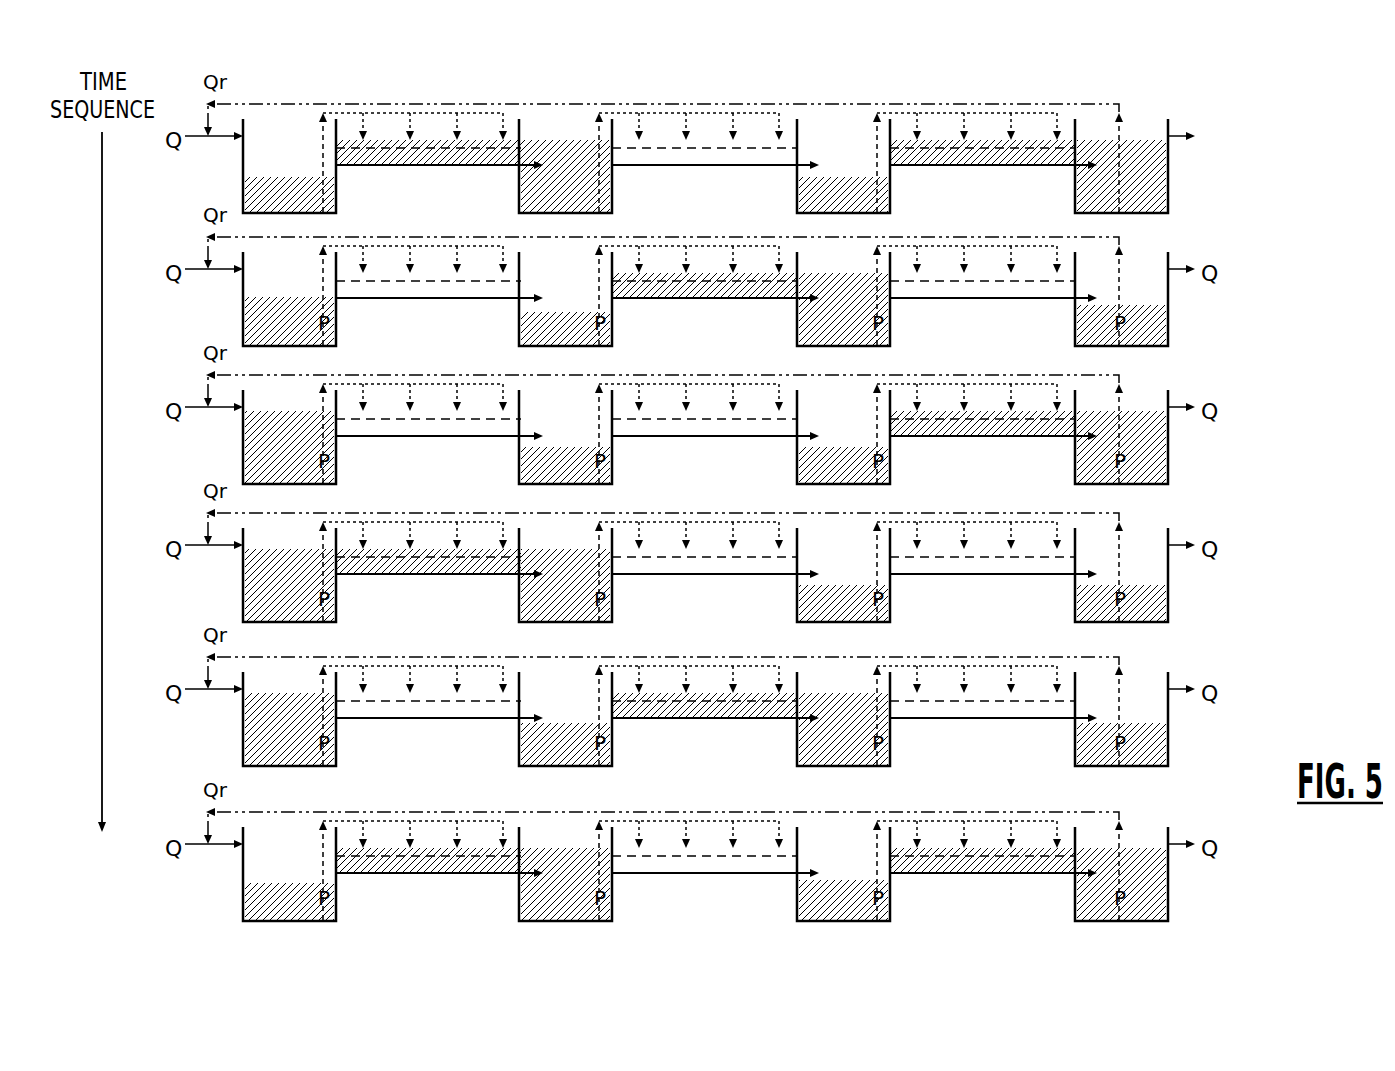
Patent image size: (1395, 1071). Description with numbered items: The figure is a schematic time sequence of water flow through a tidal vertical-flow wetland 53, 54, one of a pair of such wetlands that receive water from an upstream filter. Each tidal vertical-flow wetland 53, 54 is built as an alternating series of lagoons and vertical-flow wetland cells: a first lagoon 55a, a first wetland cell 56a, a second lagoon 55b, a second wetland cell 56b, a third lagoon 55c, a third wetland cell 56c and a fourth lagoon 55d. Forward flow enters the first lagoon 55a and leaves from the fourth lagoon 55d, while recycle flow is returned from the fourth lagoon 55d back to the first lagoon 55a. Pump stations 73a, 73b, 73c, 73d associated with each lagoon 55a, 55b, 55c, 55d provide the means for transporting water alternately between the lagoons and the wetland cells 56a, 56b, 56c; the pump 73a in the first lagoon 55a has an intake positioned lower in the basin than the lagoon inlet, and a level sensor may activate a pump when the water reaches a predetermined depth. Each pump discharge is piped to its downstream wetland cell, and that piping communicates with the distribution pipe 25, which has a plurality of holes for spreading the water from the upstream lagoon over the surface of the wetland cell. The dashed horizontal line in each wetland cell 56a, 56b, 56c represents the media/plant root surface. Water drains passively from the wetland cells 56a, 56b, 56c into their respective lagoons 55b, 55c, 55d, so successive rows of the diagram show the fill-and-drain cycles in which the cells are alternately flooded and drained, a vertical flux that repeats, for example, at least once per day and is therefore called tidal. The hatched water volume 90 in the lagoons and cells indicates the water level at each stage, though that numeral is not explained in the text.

The distribution pipe 25 is at (371, 111).
The tidal vertical-flow wetland 53 is at (1230, 112).
The tidal vertical-flow wetland 54 is at (1228, 113).
The first lagoon 55a is at (243, 158).
The second lagoon 55b is at (519, 190).
The third lagoon 55c is at (797, 190).
The fourth lagoon 55d is at (1075, 190).
The first wetland cell 56a is at (458, 86).
The second wetland cell 56b is at (720, 85).
The third wetland cell 56c is at (985, 85).
The pump station 73a is at (336, 193).
The pump station 73b is at (612, 193).
The pump station 73c is at (890, 193).
The pump station 73d is at (1127, 190).
The liquid 90 is at (250, 192).